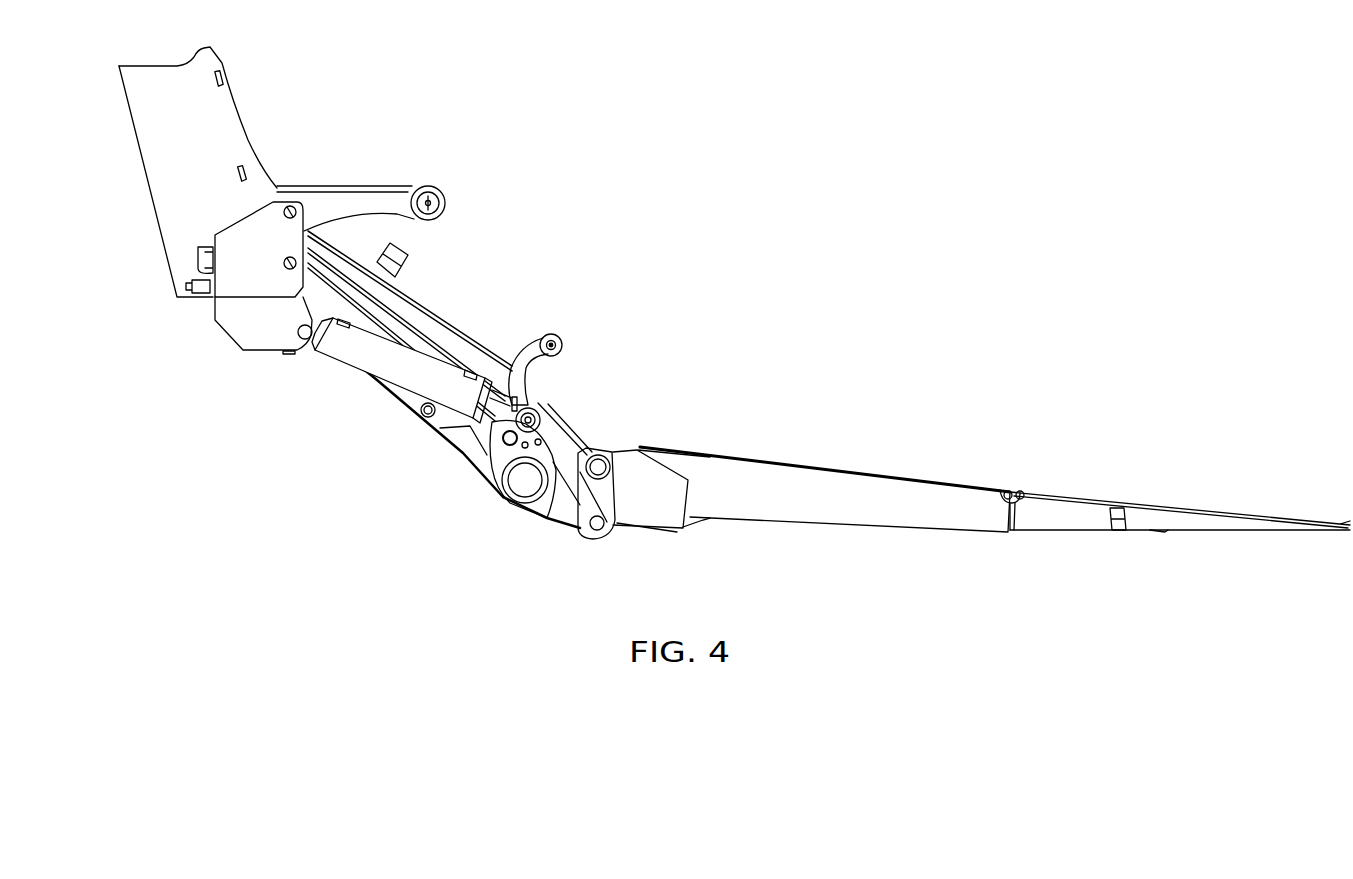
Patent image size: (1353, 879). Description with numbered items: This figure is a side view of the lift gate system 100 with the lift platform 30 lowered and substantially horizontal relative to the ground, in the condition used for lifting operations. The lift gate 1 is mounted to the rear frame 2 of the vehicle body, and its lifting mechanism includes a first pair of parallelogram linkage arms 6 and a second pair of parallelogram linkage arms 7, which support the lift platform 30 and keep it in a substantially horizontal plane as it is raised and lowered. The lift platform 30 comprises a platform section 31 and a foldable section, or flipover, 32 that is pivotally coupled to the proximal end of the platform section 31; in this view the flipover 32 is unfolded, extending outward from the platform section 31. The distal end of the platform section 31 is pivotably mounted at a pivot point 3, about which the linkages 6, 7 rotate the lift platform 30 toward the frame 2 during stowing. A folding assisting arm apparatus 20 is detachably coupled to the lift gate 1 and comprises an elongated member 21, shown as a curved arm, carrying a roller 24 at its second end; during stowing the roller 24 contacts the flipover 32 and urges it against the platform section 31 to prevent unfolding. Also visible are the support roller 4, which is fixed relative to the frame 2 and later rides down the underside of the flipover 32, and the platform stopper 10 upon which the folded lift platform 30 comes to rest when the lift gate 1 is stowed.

The lift gate 1 is at (422, 131).
The rear frame 2 is at (216, 126).
The pivot point 3 is at (600, 457).
The support roller 4 is at (445, 195).
The first pair of parallelogram linkage arms 6 is at (458, 432).
The second pair of parallelogram linkage arms 7 is at (340, 251).
The platform stopper 10 is at (412, 253).
The folding assisting arm apparatus 20 is at (559, 356).
The elongated member 21 is at (525, 372).
The roller 24 is at (562, 344).
The lift platform 30 is at (995, 471).
The platform section 31 is at (767, 468).
The foldable section 32 is at (1090, 508).
The lift gate system 100 is at (907, 197).